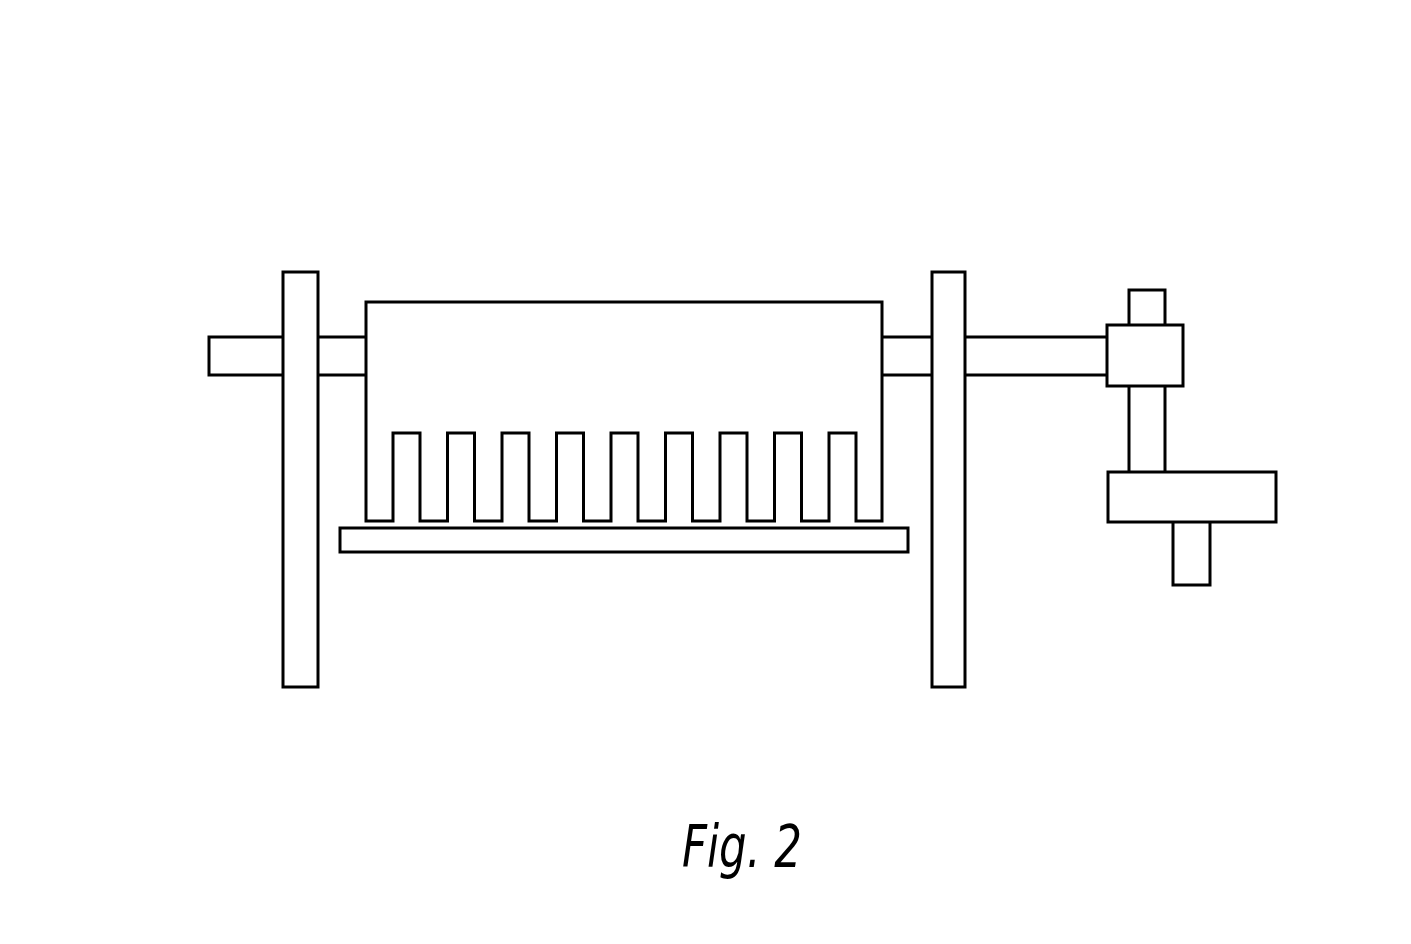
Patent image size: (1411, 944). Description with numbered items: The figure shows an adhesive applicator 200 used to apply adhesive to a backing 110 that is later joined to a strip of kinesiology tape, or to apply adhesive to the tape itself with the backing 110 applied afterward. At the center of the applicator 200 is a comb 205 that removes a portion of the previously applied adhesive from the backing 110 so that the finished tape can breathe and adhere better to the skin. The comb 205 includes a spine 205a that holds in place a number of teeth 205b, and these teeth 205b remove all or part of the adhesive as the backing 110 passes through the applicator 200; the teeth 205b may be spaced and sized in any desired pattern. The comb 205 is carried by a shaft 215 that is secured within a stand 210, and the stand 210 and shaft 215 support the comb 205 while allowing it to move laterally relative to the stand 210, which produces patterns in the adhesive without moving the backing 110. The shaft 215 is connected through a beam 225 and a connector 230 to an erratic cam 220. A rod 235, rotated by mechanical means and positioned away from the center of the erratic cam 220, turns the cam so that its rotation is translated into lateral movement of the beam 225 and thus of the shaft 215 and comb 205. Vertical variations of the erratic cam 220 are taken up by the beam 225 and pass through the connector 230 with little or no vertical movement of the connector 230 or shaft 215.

The adhesive applicator 200 is at (330, 162).
The comb 205 is at (640, 416).
The spine 205a is at (774, 327).
The teeth 205b is at (489, 483).
The backing 110 is at (765, 535).
The stand 210 is at (298, 510).
The shaft 215 is at (242, 357).
The erratic cam 220 is at (1235, 500).
The beam 225 is at (1153, 427).
The connector 230 is at (1123, 345).
The rod 235 is at (1187, 565).